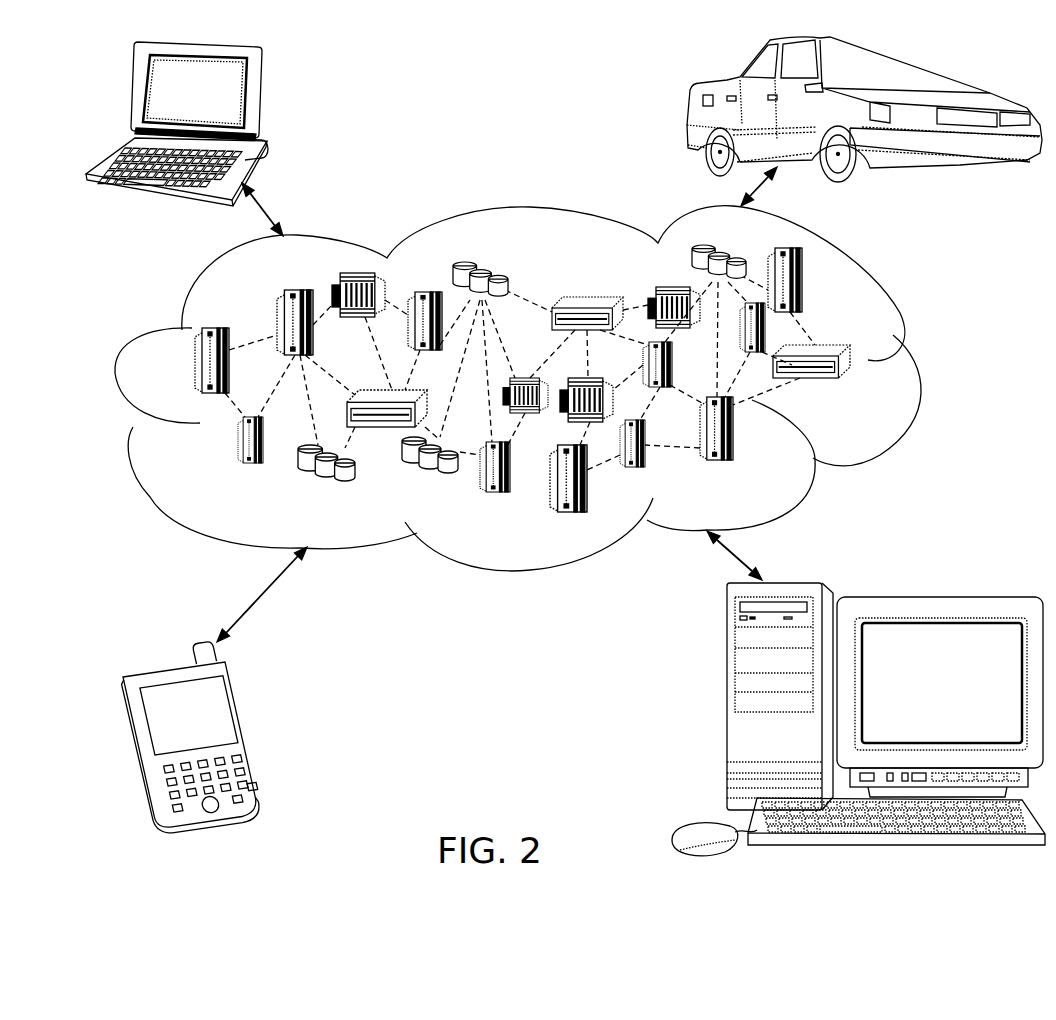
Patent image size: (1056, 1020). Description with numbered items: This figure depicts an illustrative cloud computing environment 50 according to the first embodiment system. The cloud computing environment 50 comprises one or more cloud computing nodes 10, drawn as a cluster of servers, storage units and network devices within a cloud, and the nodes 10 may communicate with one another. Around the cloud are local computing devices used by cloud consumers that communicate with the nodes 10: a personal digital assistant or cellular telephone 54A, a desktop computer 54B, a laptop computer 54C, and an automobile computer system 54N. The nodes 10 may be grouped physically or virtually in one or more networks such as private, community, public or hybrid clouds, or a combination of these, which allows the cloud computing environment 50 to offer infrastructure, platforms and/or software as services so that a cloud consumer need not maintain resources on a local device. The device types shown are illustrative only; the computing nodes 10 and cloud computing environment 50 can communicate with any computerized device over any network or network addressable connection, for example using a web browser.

The cloud computing nodes 10 is at (890, 393).
The cloud computing environment 50 is at (902, 317).
The personal digital assistant (PDA) or cellular telephone 54A is at (253, 728).
The desktop computer 54B is at (723, 708).
The laptop computer 54C is at (263, 95).
The automobile computer system 54N is at (695, 98).